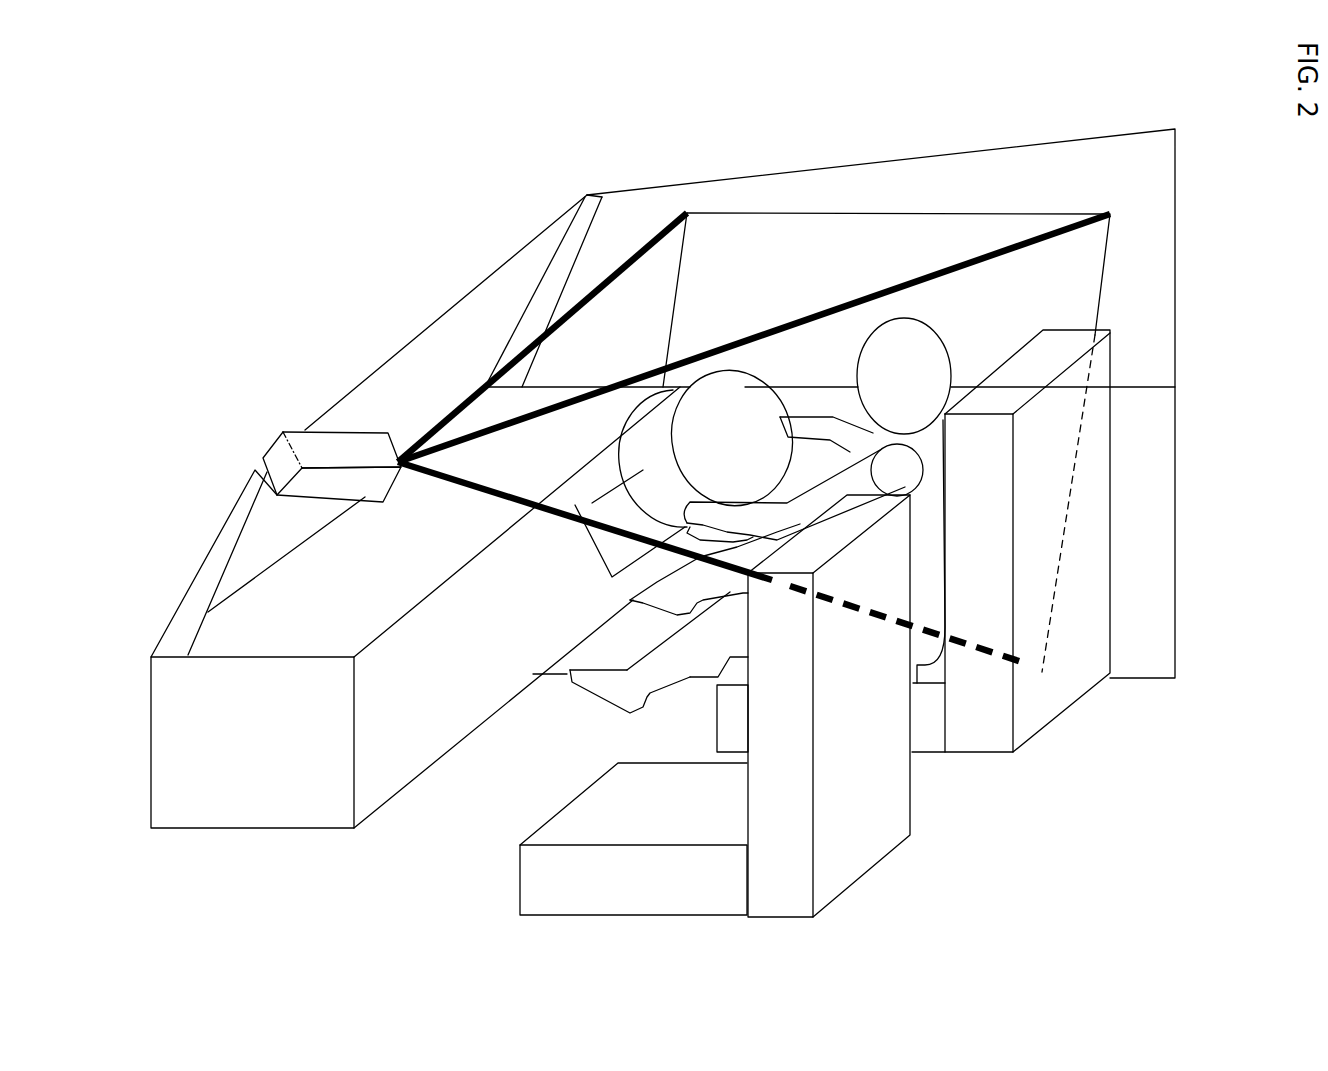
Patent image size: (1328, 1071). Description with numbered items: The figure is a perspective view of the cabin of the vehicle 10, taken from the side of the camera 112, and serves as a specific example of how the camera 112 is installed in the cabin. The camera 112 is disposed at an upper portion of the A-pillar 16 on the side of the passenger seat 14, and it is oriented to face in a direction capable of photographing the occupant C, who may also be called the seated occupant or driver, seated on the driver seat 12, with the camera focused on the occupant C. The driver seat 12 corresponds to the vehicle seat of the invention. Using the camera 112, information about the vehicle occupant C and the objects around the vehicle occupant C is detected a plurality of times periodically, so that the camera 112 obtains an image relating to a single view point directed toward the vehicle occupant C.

The vehicle 10 is at (845, 138).
The camera 112 is at (285, 430).
The A-pillar 16 is at (202, 583).
The occupant C is at (945, 321).
The driver seat 12 is at (1058, 723).
The passenger seat 14 is at (870, 870).